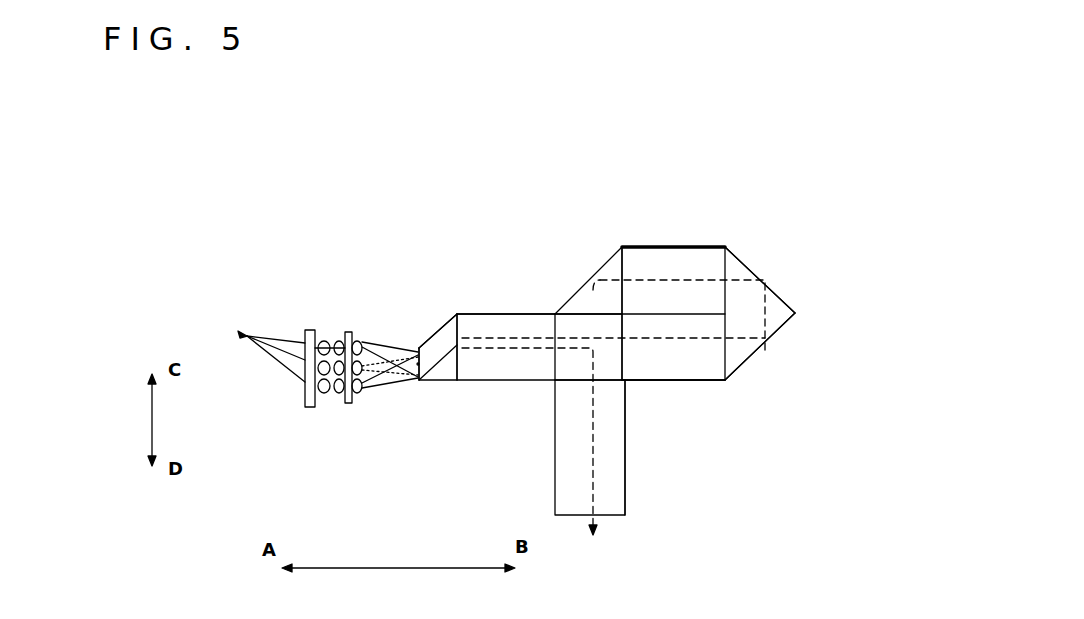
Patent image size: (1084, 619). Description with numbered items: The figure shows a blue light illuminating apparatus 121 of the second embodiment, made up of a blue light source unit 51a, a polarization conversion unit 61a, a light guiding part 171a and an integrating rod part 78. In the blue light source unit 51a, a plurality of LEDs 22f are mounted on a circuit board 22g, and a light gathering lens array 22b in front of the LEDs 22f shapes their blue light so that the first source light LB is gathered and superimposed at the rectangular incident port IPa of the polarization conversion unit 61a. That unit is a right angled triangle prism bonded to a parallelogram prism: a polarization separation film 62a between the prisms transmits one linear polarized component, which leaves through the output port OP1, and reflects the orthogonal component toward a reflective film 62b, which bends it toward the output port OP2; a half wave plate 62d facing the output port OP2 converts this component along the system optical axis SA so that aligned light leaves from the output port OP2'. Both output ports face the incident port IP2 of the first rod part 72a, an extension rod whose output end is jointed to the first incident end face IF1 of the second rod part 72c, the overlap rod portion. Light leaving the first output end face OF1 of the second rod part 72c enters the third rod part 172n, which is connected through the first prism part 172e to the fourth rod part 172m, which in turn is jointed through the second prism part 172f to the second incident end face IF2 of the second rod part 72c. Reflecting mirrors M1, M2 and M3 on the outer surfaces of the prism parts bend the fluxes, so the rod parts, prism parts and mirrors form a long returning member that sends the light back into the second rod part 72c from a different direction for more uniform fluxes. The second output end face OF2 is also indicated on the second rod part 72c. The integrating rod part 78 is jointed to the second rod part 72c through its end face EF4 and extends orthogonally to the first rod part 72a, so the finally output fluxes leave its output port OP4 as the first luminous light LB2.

The blue light illuminating apparatus 121 is at (853, 104).
The LEDs 22f is at (258, 347).
The circuit board 22g is at (307, 330).
The light gathering lens array 22b is at (344, 333).
The first source light LB is at (357, 334).
The blue light source unit 51a is at (304, 290).
The incident port IPa is at (415, 386).
The polarization conversion unit 61a is at (440, 402).
The polarization separation film 62a is at (428, 382).
The reflective film 62b is at (442, 335).
The wave plate 62d is at (455, 314).
The incident port IP2 is at (458, 383).
The output port OP1 is at (468, 383).
The output port OP2 is at (438, 261).
The output port OP2' is at (483, 273).
The first rod part 72a is at (515, 313).
The system optical axis SA is at (500, 352).
The second output end face OF2 is at (570, 386).
The first incident end face IF1 is at (543, 315).
The second incident end face IF2 is at (580, 315).
The reflecting mirror M3 is at (608, 260).
The light guiding part 171a is at (622, 213).
The second prism part 172f is at (638, 247).
The fourth rod part 172m is at (680, 257).
The reflecting mirror M2 is at (763, 280).
The first prism part 172e is at (797, 313).
The reflecting mirror M1 is at (765, 343).
The third rod part 172n is at (697, 380).
The first output end face OF1 is at (630, 381).
The second rod part 72c is at (623, 393).
The end face EF4 is at (626, 405).
The first luminous light LB2 is at (555, 483).
The integrating rod part 78 is at (610, 498).
The output port OP4 is at (607, 516).